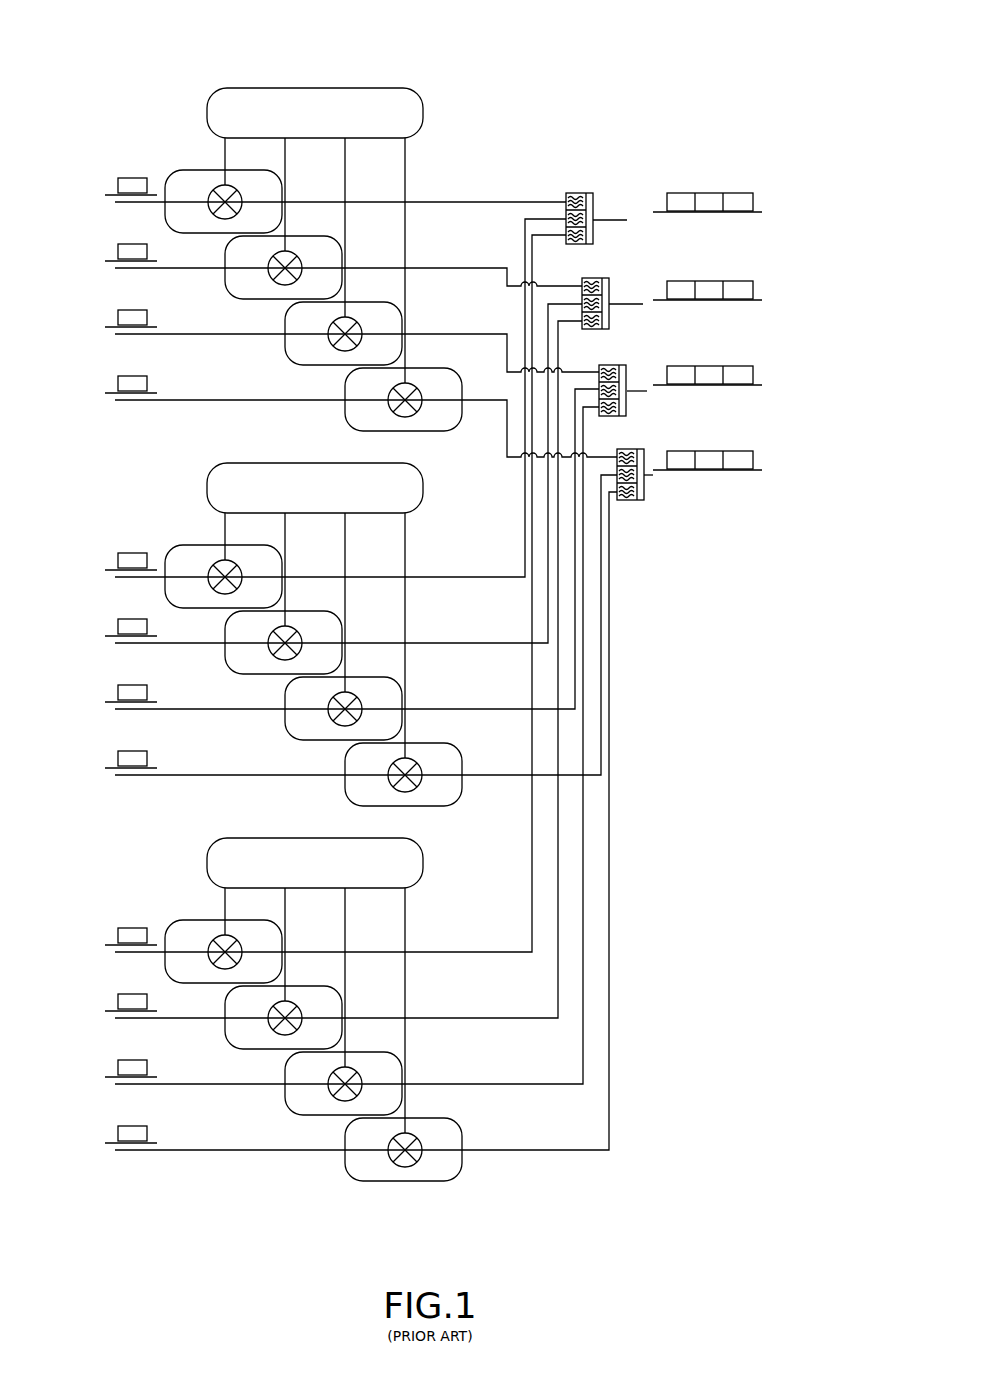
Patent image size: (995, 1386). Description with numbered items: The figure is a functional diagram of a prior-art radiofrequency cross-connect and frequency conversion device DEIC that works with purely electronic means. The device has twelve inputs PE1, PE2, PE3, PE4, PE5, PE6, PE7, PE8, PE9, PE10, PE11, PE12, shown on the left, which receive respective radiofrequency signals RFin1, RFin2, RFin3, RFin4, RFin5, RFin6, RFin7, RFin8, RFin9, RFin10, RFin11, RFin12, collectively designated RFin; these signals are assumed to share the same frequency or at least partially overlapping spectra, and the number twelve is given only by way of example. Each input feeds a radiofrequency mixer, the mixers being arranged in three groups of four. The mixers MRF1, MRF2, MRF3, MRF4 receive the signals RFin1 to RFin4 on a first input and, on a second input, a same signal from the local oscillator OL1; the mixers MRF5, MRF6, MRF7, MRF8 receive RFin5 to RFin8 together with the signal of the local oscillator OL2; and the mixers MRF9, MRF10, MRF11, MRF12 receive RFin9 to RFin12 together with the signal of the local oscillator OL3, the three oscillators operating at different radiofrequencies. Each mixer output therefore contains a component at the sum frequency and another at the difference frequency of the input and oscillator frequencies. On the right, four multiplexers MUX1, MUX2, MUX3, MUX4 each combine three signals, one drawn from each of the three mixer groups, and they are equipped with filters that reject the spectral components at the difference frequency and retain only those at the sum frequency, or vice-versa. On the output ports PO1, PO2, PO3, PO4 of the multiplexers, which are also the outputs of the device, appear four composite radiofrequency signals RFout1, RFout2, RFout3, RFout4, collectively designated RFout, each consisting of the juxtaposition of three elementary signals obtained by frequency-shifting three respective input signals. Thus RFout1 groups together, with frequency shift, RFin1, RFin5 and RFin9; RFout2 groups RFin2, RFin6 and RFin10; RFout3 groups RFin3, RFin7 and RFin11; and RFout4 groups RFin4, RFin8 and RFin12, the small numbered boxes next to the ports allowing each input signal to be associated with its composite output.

The radiofrequency input signals RFin is at (100, 125).
The radiofrequency output signals RFout is at (752, 148).
The cross-connect and frequency conversion device DEIC is at (480, 1200).
The local oscillator OL1 is at (263, 88).
The local oscillator OL2 is at (422, 484).
The local oscillator OL3 is at (422, 859).
The radiofrequency mixer MRF1 is at (205, 170).
The radiofrequency mixer MRF2 is at (252, 300).
The radiofrequency mixer MRF3 is at (310, 366).
The radiofrequency mixer MRF4 is at (351, 430).
The radiofrequency mixer MRF5 is at (205, 545).
The radiofrequency mixer MRF6 is at (252, 675).
The radiofrequency mixer MRF7 is at (310, 741).
The radiofrequency mixer MRF8 is at (351, 807).
The radiofrequency mixer MRF9 is at (205, 920).
The radiofrequency mixer MRF10 is at (252, 1050).
The radiofrequency mixer MRF11 is at (310, 1116).
The radiofrequency mixer MRF12 is at (351, 1182).
The input PE1 is at (123, 202).
The input PE2 is at (123, 268).
The input PE3 is at (123, 334).
The input PE4 is at (123, 400).
The input PE5 is at (123, 577).
The input PE6 is at (123, 643).
The input PE7 is at (123, 709).
The input PE8 is at (123, 775).
The input PE9 is at (123, 952).
The input PE10 is at (123, 1018).
The input PE11 is at (123, 1084).
The input PE12 is at (123, 1150).
The radiofrequency signal RFin1 is at (124, 175).
The radiofrequency signal RFin2 is at (124, 241).
The radiofrequency signal RFin3 is at (124, 307).
The radiofrequency signal RFin4 is at (124, 373).
The radiofrequency signal RFin5 is at (124, 550).
The radiofrequency signal RFin6 is at (124, 616).
The radiofrequency signal RFin7 is at (124, 682).
The radiofrequency signal RFin8 is at (124, 748).
The radiofrequency signal RFin9 is at (124, 925).
The radiofrequency signal RFin10 is at (114, 991).
The radiofrequency signal RFin11 is at (114, 1057).
The radiofrequency signal RFin12 is at (114, 1123).
The multiplexer MUX1 is at (580, 193).
The multiplexer MUX2 is at (591, 278).
The multiplexer MUX3 is at (633, 357).
The multiplexer MUX4 is at (633, 503).
The output port PO1 is at (607, 220).
The output port PO2 is at (616, 306).
The output port PO3 is at (632, 392).
The output port PO4 is at (647, 478).
The composite radiofrequency output signal RFout1 is at (707, 190).
The composite radiofrequency output signal RFout2 is at (707, 278).
The composite radiofrequency output signal RFout3 is at (707, 363).
The composite radiofrequency output signal RFout4 is at (707, 448).